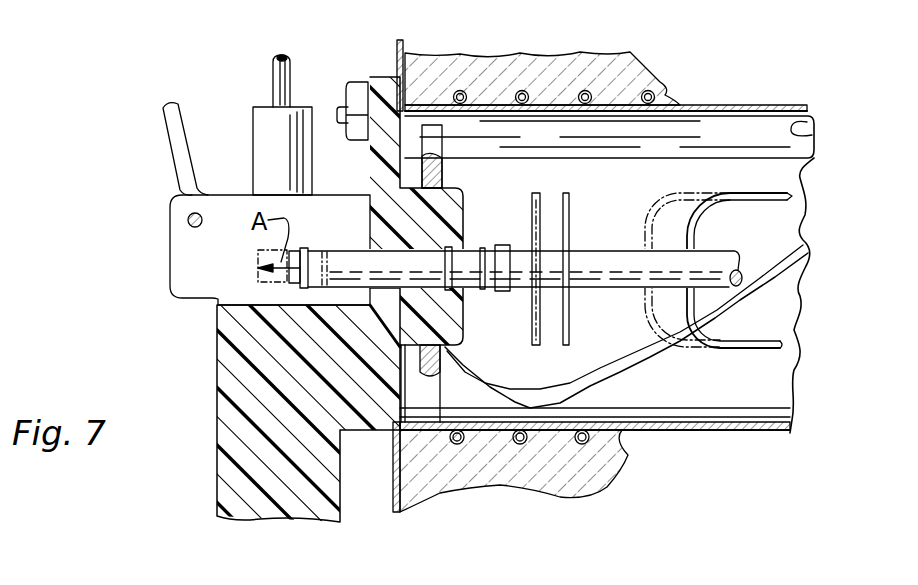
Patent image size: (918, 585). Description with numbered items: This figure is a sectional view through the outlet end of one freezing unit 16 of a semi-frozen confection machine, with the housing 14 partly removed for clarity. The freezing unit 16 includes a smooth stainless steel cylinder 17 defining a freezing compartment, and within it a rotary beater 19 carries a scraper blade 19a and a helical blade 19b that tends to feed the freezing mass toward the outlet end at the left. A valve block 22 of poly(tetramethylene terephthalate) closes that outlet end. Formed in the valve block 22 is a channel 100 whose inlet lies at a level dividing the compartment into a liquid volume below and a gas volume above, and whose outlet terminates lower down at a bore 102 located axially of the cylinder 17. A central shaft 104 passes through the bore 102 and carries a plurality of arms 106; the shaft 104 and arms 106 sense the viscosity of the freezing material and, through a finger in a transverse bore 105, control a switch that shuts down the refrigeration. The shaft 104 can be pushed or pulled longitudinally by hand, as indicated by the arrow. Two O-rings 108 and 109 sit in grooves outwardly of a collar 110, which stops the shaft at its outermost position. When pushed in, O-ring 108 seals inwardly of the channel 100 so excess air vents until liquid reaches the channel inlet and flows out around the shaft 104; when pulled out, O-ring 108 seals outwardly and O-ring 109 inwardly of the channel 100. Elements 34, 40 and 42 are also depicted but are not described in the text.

The housing 14 is at (405, 48).
The freezing unit 16 is at (638, 443).
The cylinder 17 is at (814, 134).
The rotary beater 19 is at (639, 160).
The scraper blade 19a is at (764, 410).
The helical blade 19b is at (860, 291).
The valve block 22 is at (214, 340).
The rod 34 is at (290, 68).
The cylinder 40 is at (262, 133).
The spring strip 42 is at (177, 148).
The channel 100 is at (467, 213).
The bore 102 is at (391, 290).
The central shaft 104 is at (612, 272).
The transverse bore 105 is at (325, 250).
The arms 106 is at (746, 193).
The O-ring 108 is at (447, 292).
The O-ring 109 is at (482, 248).
The collar 110 is at (510, 292).